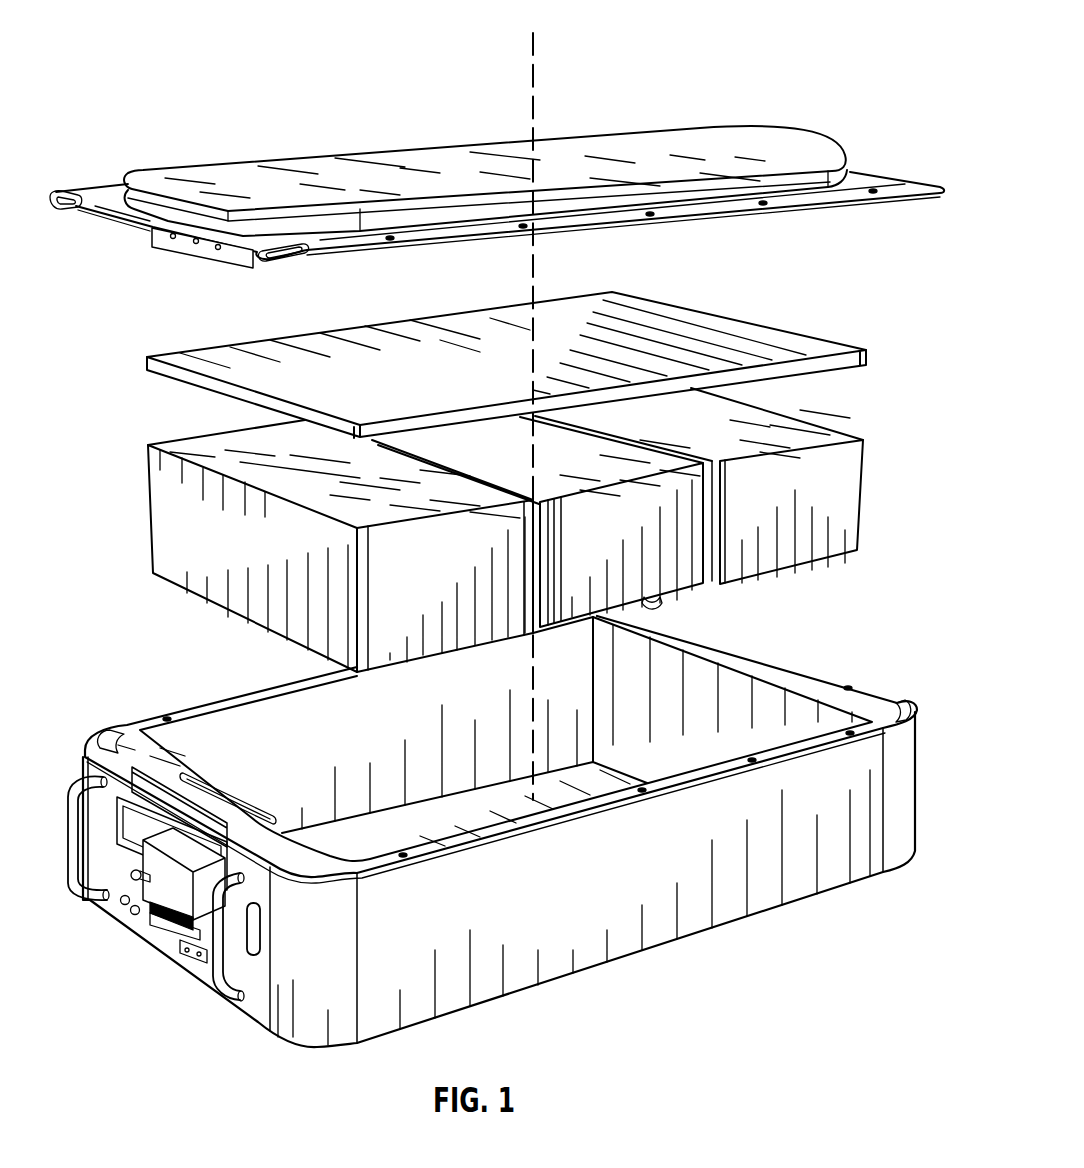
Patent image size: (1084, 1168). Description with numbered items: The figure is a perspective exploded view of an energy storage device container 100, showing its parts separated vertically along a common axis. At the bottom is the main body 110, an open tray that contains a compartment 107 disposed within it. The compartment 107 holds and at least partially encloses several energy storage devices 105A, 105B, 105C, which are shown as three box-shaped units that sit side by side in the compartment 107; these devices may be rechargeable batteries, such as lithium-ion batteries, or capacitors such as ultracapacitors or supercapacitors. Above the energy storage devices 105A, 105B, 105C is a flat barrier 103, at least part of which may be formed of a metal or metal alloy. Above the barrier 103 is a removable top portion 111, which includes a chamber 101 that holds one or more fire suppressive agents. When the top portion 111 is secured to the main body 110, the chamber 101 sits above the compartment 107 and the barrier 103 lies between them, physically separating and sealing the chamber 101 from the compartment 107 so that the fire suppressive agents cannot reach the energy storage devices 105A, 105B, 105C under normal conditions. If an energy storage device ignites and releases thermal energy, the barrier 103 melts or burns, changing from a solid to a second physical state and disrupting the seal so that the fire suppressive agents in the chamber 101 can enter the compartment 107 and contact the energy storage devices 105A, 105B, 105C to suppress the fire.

The energy storage device container 100 is at (500, 534).
The chamber 101 is at (245, 170).
The barrier 103 is at (178, 357).
The energy storage device 105A is at (163, 519).
The energy storage device 105B is at (668, 565).
The energy storage device 105C is at (786, 552).
The compartment 107 is at (327, 757).
The main body 110 is at (905, 701).
The top portion 111 is at (890, 183).